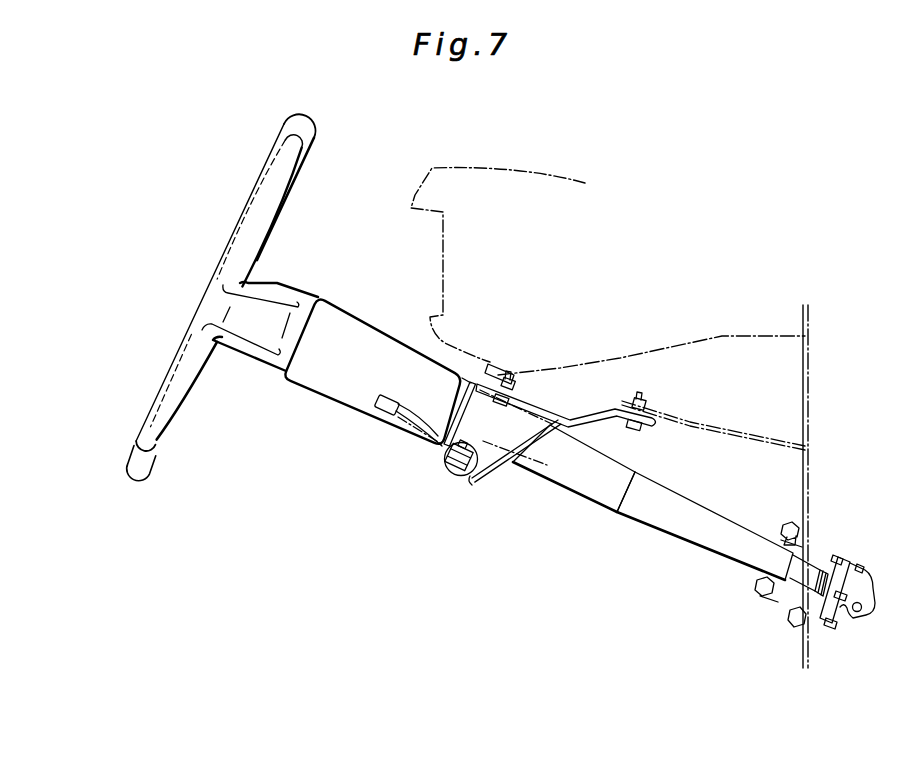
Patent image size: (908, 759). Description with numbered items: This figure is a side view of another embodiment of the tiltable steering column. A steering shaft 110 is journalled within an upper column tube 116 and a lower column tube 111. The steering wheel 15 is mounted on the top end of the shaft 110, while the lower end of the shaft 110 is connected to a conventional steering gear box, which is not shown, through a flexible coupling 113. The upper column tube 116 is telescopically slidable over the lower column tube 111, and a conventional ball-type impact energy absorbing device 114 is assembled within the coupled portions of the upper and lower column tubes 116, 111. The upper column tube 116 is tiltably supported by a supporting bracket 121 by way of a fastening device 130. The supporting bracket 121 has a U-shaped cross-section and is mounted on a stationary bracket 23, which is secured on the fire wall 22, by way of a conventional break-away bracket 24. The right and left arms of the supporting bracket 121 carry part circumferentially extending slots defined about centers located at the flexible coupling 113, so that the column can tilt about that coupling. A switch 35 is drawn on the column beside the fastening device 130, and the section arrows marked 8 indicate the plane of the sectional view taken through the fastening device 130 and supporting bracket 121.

The steering wheel 15 is at (269, 198).
The switch 35 is at (393, 397).
The fastening device 130 is at (441, 469).
The supporting bracket 121 is at (463, 480).
The section line 8- 8 is at (466, 448).
The break-away bracket 24 is at (605, 417).
The stationary bracket 23 is at (672, 355).
The fire wall 22 is at (812, 418).
The upper column tube 116 is at (582, 480).
The ball-type impact energy absorbing device 114 is at (630, 485).
The lower column tube 111 is at (676, 524).
The steering shaft 110 is at (808, 568).
The flexible coupling 113 is at (853, 566).